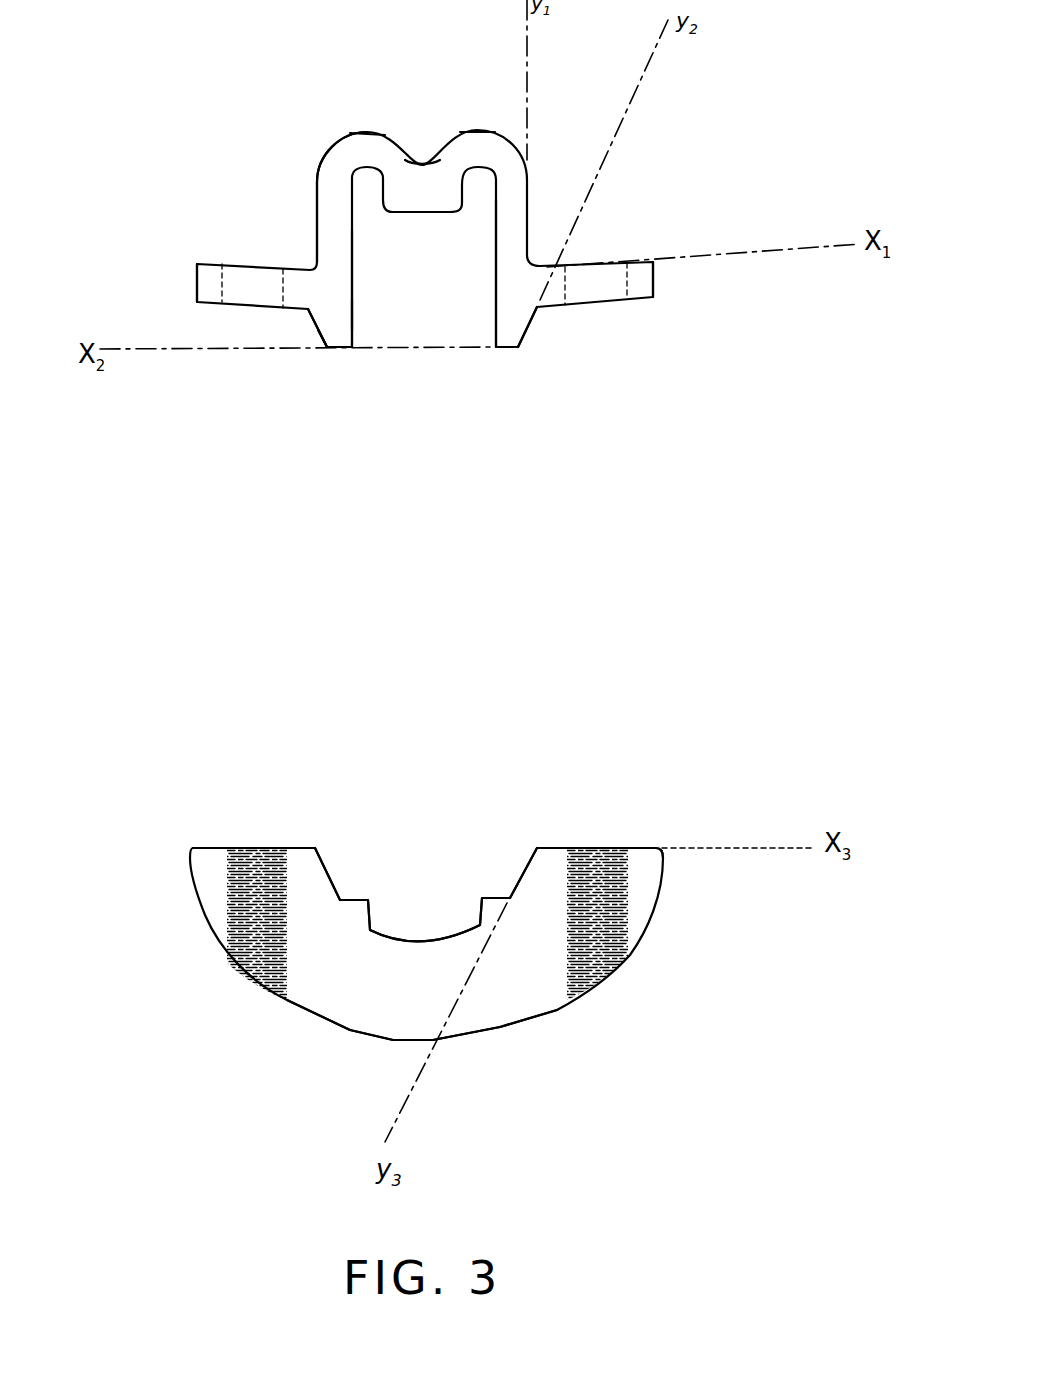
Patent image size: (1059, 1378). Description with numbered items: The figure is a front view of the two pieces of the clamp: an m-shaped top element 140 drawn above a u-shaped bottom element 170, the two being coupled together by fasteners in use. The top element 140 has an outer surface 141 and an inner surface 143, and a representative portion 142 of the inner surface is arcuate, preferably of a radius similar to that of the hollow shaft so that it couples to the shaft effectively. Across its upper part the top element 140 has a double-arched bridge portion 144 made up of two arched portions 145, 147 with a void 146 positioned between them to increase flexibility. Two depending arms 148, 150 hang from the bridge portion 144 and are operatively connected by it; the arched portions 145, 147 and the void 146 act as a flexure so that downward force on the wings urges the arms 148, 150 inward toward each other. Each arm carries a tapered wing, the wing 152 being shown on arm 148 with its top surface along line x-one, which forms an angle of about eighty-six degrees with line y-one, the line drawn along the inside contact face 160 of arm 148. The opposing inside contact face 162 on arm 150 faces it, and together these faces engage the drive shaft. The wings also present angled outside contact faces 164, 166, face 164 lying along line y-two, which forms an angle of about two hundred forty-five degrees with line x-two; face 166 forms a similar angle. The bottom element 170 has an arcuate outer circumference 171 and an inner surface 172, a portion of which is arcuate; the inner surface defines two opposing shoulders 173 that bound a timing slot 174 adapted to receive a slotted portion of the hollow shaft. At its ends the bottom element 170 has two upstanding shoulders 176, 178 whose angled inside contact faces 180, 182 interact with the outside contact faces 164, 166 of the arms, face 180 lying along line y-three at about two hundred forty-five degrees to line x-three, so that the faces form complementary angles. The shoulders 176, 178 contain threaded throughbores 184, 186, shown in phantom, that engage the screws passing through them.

The top element 140 is at (152, 183).
The outer surface 141 is at (326, 198).
The arcuate portion of inner surface 142 is at (418, 213).
The inner surface 143 is at (352, 330).
The double-arched bridge portion 144 is at (333, 132).
The arched portion 145 is at (353, 148).
The void 146 is at (417, 146).
The arched portion 147 is at (475, 148).
The arm 148 is at (510, 328).
The arm 150 is at (338, 337).
The tapered wing 152 is at (208, 283).
The inside contact face 160 is at (496, 256).
The inside contact face 162 is at (352, 282).
The angled outside contact face 164 is at (530, 320).
The angled outside contact face 166 is at (318, 330).
The bottom element 170 is at (278, 1015).
The arcuate outer circumference 171 is at (347, 1032).
The inner surface 172 is at (482, 888).
The opposing shoulders 173 is at (362, 886).
The timing slot 174 is at (421, 920).
The upstanding shoulder 176 is at (647, 857).
The upstanding shoulder 178 is at (204, 858).
The angled inside contact face 180 is at (523, 868).
The angled inside contact face 182 is at (328, 864).
The threaded throughbore 184 is at (603, 992).
The threaded throughbore 186 is at (255, 838).